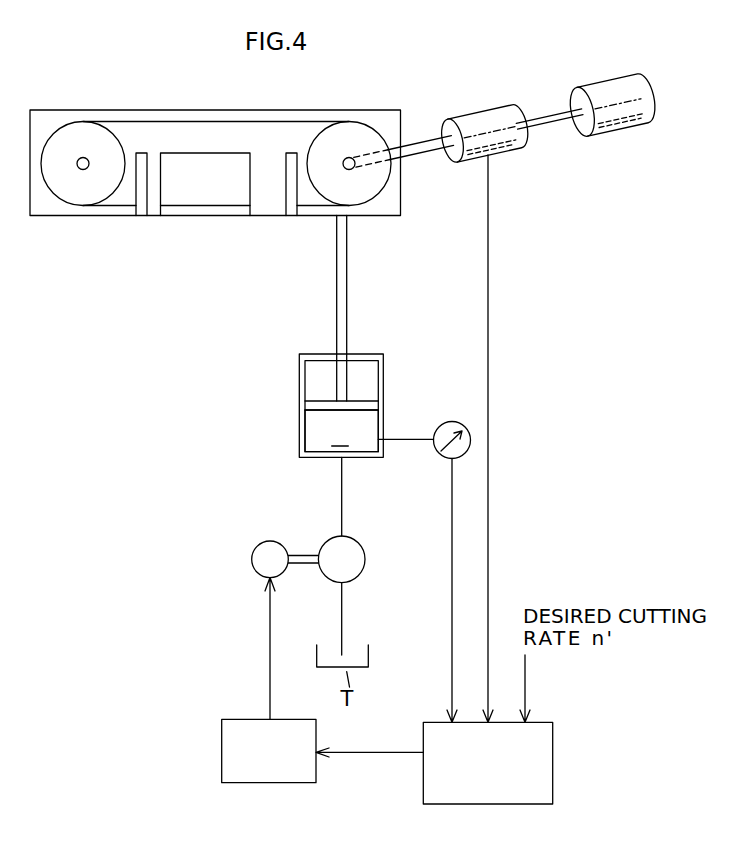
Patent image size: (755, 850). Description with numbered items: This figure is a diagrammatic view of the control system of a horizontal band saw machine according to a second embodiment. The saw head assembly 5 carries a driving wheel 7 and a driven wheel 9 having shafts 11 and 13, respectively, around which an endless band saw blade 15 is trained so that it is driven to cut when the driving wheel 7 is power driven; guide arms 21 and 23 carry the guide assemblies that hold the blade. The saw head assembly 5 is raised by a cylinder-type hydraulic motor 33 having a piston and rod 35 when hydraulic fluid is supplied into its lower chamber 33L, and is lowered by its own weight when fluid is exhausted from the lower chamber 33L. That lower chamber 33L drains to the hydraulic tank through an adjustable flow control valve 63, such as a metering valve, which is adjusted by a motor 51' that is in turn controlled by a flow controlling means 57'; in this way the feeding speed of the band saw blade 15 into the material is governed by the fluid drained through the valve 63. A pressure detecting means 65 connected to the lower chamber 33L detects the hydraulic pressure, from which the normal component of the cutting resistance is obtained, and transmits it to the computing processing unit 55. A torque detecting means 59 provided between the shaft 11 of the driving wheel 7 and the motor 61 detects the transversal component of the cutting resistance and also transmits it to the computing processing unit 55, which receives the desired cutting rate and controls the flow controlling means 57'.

The saw head assembly 5 is at (198, 108).
The driving wheel 7 is at (375, 130).
The driven wheel 9 is at (67, 127).
The shaft of the driving wheel 11 is at (347, 158).
The shaft of the driven wheel 13 is at (86, 158).
The band saw blade 15 is at (257, 122).
The guide arm 21 is at (274, 179).
The guide arm 23 is at (157, 179).
The hydraulic motor 33 is at (299, 392).
The lower chamber 33L is at (310, 433).
The piston rod 35 is at (347, 272).
The motor 51' is at (249, 559).
The computing processing unit 55 is at (467, 772).
The flow controlling means 57' is at (269, 750).
The torque detecting means 59 is at (483, 117).
The motor 61 is at (607, 82).
The adjustable flow control valve 63 is at (365, 561).
The pressure detecting means 65 is at (444, 429).